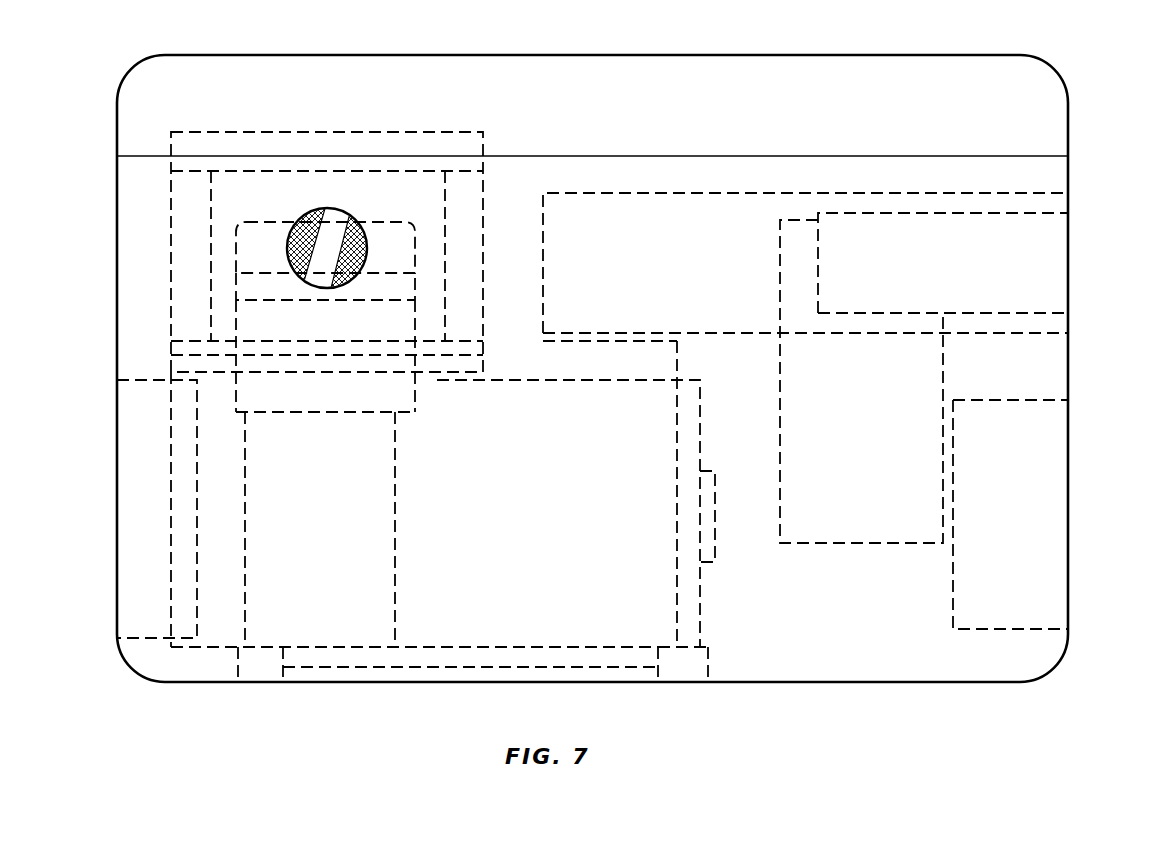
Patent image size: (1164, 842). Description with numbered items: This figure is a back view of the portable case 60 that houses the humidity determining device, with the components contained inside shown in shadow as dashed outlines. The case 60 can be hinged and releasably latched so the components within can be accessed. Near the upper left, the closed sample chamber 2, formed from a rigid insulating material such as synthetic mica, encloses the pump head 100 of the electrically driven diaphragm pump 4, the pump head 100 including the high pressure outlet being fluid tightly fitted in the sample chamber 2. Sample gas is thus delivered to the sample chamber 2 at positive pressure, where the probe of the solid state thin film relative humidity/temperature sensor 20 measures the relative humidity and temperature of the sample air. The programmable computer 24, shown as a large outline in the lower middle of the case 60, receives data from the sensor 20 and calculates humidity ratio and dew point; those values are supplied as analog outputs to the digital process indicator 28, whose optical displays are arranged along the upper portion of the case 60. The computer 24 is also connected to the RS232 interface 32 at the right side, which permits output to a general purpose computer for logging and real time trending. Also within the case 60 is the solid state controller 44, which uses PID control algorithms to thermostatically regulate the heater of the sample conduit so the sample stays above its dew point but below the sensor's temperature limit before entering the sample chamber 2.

The case 60 is at (645, 56).
The sample chamber 2 is at (183, 136).
The pump head 100 is at (253, 322).
The diaphragm pump 4 is at (260, 468).
The programmable computer 24 is at (643, 617).
The digital process indicator 28 is at (706, 200).
The solid state controller 44 is at (1040, 290).
The relative humidity/temperature sensor 20 is at (866, 512).
The RS232 interface 32 is at (1037, 540).